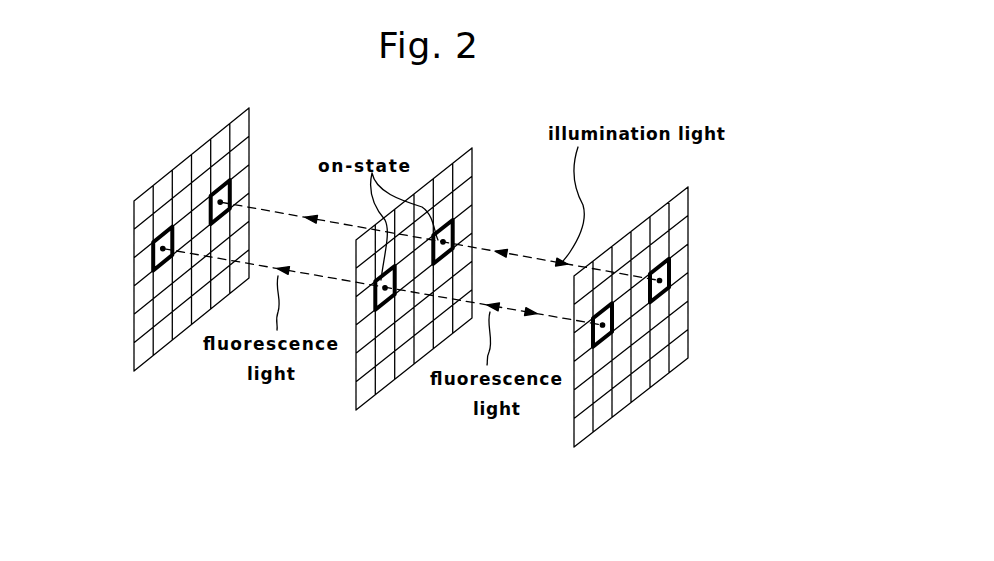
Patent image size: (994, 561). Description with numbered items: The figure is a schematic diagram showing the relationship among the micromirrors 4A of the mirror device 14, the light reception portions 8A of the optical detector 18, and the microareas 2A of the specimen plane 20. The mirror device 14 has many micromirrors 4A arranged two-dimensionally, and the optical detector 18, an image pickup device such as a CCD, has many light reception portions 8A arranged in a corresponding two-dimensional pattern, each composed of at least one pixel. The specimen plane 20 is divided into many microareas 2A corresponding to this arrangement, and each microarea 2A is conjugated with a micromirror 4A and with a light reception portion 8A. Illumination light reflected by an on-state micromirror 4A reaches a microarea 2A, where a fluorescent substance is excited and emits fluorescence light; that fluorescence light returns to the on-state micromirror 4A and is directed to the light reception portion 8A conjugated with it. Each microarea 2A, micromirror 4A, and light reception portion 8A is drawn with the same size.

The optical detector 18 is at (186, 270).
The light reception portion 8A is at (243, 127).
The mirror device 14 is at (402, 307).
The micromirror 4A is at (462, 165).
The specimen plane 20 is at (624, 347).
The microarea 2A is at (678, 203).